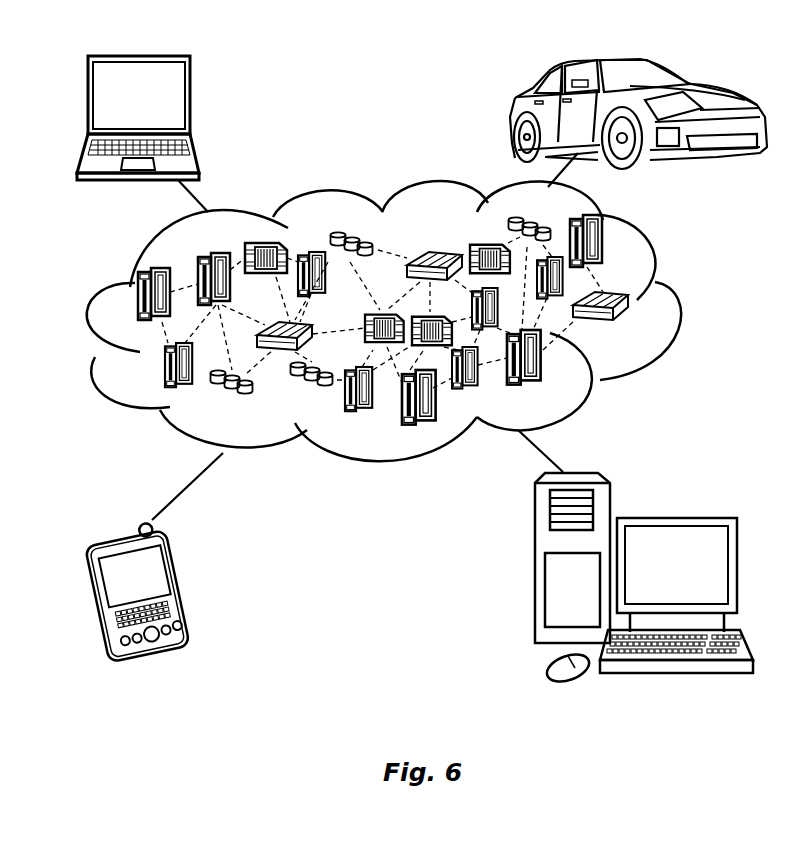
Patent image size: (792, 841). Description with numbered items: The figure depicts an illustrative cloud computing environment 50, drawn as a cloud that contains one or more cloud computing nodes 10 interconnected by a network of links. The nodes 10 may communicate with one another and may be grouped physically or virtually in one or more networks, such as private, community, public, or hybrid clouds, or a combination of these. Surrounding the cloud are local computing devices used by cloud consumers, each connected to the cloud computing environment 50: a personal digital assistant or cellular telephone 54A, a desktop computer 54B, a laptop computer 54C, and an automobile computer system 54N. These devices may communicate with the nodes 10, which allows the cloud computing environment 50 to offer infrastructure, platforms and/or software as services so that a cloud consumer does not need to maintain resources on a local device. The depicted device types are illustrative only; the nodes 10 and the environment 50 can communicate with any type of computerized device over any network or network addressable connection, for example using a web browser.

The cloud computing node 10 is at (647, 337).
The cloud computing environment 50 is at (675, 305).
The personal digital assistant (PDA) or cellular telephone 54A is at (183, 580).
The desktop computer 54B is at (692, 513).
The laptop computer 54C is at (190, 90).
The automobile computer system 54N is at (510, 104).